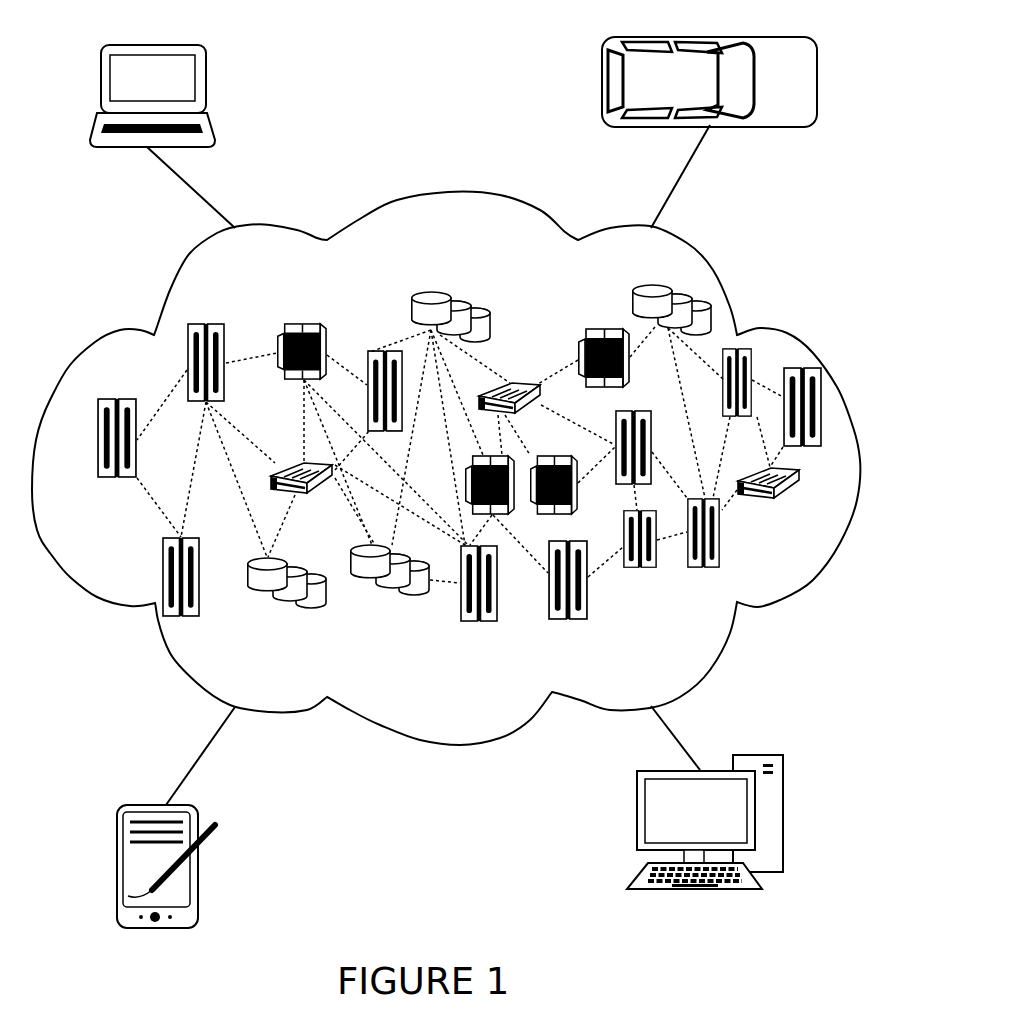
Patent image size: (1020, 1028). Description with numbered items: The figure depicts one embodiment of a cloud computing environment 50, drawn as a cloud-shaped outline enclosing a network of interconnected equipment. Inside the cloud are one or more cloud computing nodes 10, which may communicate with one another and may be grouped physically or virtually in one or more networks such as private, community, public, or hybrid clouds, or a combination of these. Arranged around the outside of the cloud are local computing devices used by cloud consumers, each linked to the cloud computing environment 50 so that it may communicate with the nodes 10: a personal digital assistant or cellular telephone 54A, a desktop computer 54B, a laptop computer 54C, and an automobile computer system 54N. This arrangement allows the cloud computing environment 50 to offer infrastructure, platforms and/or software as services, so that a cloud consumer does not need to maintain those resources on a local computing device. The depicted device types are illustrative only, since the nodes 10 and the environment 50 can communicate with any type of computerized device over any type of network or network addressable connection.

The cloud computing node 10 is at (692, 612).
The cloud computing environment 50 is at (700, 258).
The personal digital assistant or cellular telephone 54A is at (198, 872).
The desktop computer 54B is at (783, 808).
The laptop computer 54C is at (203, 87).
The automobile computer system 54N is at (602, 80).